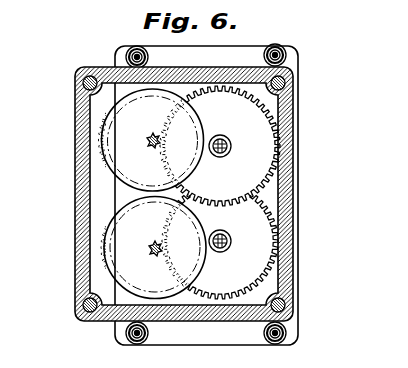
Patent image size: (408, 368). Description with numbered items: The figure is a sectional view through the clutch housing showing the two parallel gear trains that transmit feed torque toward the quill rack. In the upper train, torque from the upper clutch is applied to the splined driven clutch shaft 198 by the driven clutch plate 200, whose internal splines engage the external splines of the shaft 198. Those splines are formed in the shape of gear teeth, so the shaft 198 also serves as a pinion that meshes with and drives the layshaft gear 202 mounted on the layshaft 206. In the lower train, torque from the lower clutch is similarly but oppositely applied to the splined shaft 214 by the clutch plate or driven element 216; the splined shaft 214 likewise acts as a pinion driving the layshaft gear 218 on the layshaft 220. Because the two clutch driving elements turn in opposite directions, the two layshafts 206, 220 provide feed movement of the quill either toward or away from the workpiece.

The splined driven clutch shaft 198 is at (148, 139).
The driven clutch plate 200 is at (118, 100).
The layshaft gear 202 is at (262, 129).
The layshaft 206 is at (230, 147).
The splined shaft 214 is at (150, 248).
The clutch plate or driven element 216 is at (118, 285).
The layshaft gear 218 is at (257, 251).
The layshaft 220 is at (230, 237).